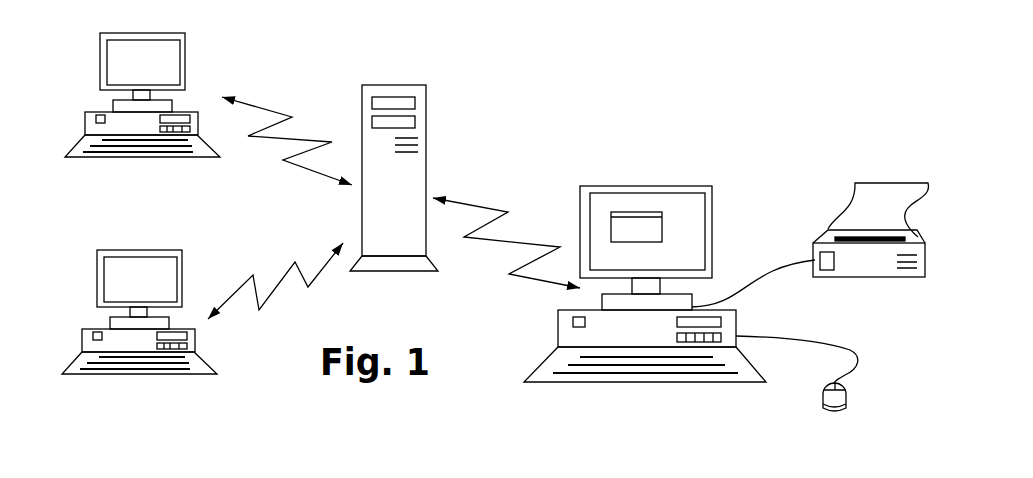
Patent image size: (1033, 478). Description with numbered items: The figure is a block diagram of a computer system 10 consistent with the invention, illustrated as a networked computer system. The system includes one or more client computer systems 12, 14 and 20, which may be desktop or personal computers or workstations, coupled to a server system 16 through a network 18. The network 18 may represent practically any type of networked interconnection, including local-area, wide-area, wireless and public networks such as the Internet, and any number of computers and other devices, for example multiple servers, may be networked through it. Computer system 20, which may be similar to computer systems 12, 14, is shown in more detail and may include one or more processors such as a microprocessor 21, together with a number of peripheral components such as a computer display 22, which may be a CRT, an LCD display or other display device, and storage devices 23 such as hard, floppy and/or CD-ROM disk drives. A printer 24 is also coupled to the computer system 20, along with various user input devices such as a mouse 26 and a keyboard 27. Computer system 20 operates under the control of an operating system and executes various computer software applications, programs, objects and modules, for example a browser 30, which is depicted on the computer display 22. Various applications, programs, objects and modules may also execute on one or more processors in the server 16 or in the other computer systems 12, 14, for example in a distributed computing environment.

The computer system 10 is at (566, 93).
The client computer system 12 is at (100, 52).
The client computer system 14 is at (97, 253).
The server system 16 is at (381, 84).
The network 18 is at (295, 262).
The computer system 20 is at (704, 185).
The microprocessor 21 is at (616, 337).
The computer display 22 is at (618, 190).
The storage devices 23 is at (693, 343).
The printer 24 is at (828, 240).
The mouse 26 is at (845, 402).
The keyboard 27 is at (545, 381).
The browser 30 is at (608, 225).